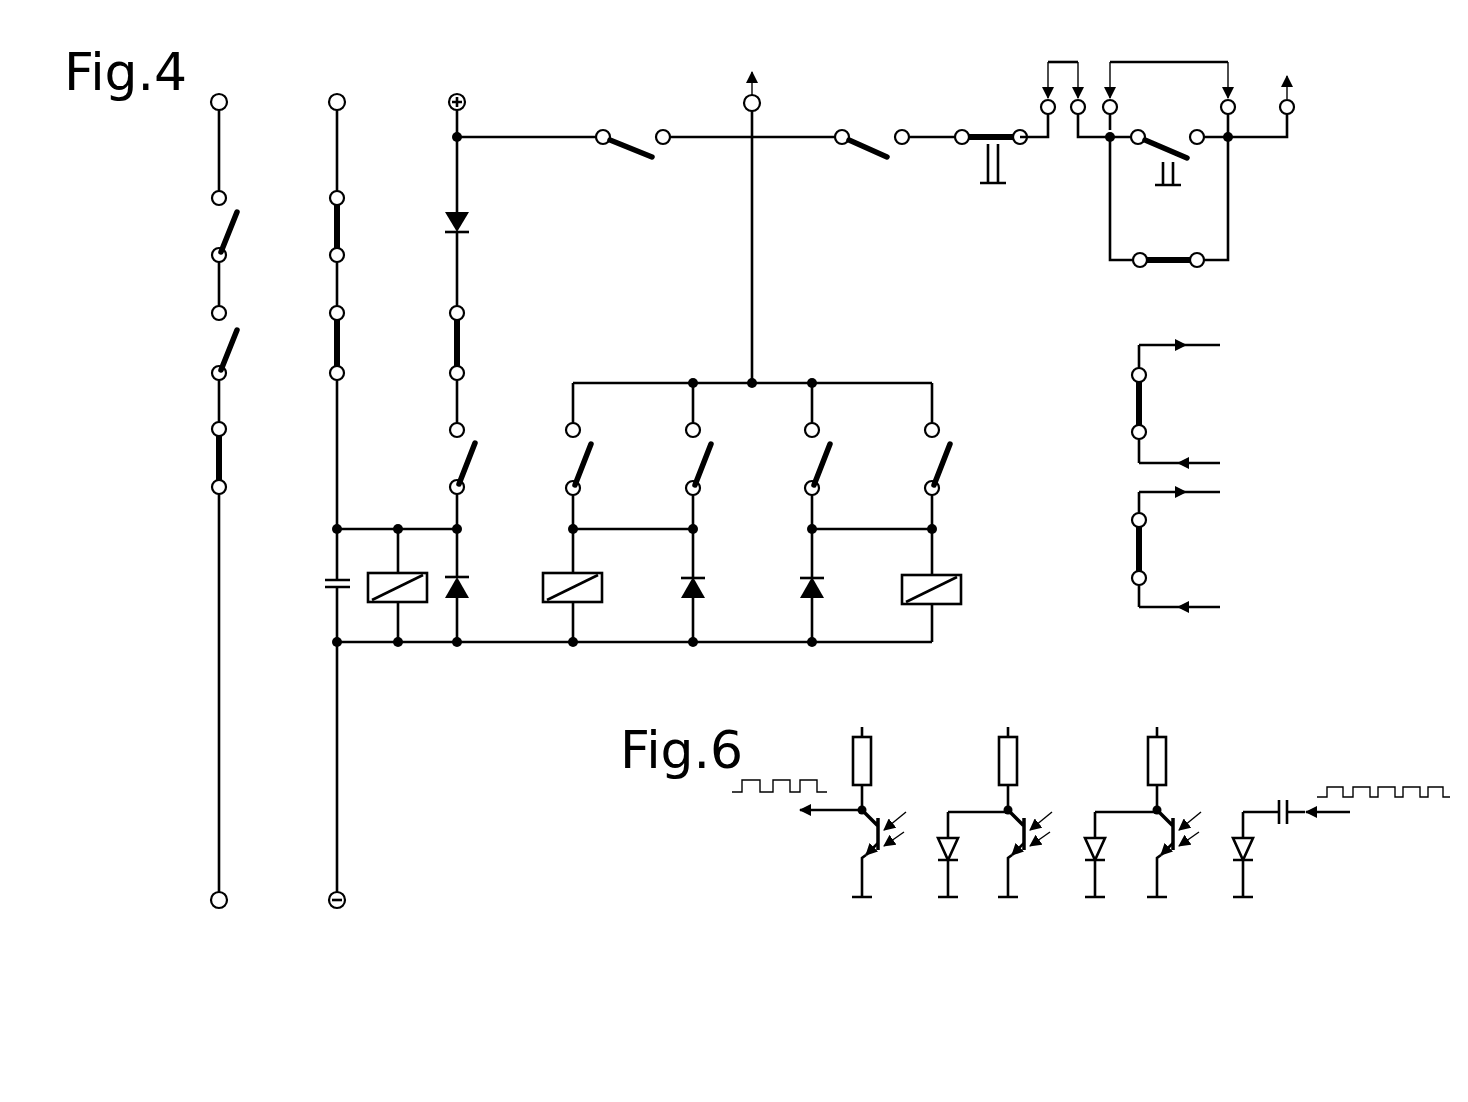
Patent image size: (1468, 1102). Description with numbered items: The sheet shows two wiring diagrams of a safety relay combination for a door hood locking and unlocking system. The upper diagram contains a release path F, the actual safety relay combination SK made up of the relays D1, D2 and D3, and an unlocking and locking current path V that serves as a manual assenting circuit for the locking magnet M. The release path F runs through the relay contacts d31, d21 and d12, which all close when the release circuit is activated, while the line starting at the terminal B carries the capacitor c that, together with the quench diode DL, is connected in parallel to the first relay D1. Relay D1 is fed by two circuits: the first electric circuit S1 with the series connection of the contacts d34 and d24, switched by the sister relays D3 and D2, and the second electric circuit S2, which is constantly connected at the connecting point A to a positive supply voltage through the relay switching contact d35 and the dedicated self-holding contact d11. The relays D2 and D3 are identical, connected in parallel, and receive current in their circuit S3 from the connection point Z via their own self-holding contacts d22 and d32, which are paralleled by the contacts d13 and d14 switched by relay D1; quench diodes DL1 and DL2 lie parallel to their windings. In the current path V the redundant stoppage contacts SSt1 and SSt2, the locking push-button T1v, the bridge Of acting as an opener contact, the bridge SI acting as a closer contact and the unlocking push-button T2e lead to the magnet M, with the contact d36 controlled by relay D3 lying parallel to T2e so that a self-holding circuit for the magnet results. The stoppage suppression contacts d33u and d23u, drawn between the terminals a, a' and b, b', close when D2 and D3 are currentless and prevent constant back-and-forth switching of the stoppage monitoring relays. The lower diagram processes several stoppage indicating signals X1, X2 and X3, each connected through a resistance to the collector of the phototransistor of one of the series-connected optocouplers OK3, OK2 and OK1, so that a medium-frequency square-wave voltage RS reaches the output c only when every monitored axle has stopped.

In FIG. 4, the release path F is at (215, 501).
In FIG. 4, the terminal B is at (355, 486).
In FIG. 4, the connecting point A is at (488, 355).
In FIG. 4, the connection point Z is at (752, 78).
In FIG. 4, the unlocking and locking current path V is at (777, 130).
In FIG. 4, the stoppage relay contact SSt1 is at (622, 155).
In FIG. 4, the stoppage relay contact SSt2 is at (862, 152).
In FIG. 4, the locking push-button T1v is at (991, 174).
In FIG. 4, the bridge Of is at (1047, 63).
In FIG. 4, the bridge SI is at (1168, 62).
In FIG. 4, the locking magnet M is at (1261, 93).
In FIG. 4, the unlocking push-button T2e is at (1169, 174).
In FIG. 4, the relay contact d36 is at (1168, 267).
In FIG. 4, the relay contact d31 is at (236, 228).
In FIG. 4, the relay contact d34 is at (340, 222).
In FIG. 4, the relay contact d21 is at (236, 345).
In FIG. 4, the relay contact d24 is at (340, 338).
In FIG. 4, the relay switching contact d35 is at (460, 338).
In FIG. 4, the relay contact d12 is at (222, 455).
In FIG. 4, the first electric circuit S1 is at (340, 440).
In FIG. 4, the second electric circuit S2 is at (460, 418).
In FIG. 4, the circuit S3 is at (750, 313).
In FIG. 4, the self-holding switching contact d11 is at (474, 455).
In FIG. 4, the contact d13 is at (590, 455).
In FIG. 4, the self-holding contact d22 is at (710, 455).
In FIG. 4, the self-holding contact d32 is at (829, 455).
In FIG. 4, the contact d14 is at (949, 455).
In FIG. 4, the first relay D1 is at (394, 576).
In FIG. 4, the relay D2 is at (586, 576).
In FIG. 4, the relay D3 is at (946, 576).
In FIG. 4, the quench diode DL is at (468, 593).
In FIG. 4, the quench diode DL1 is at (704, 594).
In FIG. 4, the quench diode DL2 is at (823, 594).
In FIG. 4, the capacitor c is at (330, 592).
In FIG. 6, the capacitor c is at (808, 815).
In FIG. 4, the safety relay combination SK is at (543, 652).
In FIG. 4, the stoppage suppression contact d33u is at (1138, 405).
In FIG. 4, the stoppage suppression contact d23u is at (1140, 551).
In FIG. 4, the terminal a is at (1189, 346).
In FIG. 4, the terminal a' is at (1193, 464).
In FIG. 4, the terminal b is at (1190, 493).
In FIG. 4, the terminal b' is at (1193, 608).
In FIG. 6, the stoppage indicating signal X1 is at (865, 798).
In FIG. 6, the stoppage indicating signal X2 is at (1011, 798).
In FIG. 6, the stoppage indicating signal X3 is at (1160, 798).
In FIG. 6, the optocoupler/amplifier stage OK1 is at (1225, 835).
In FIG. 6, the optocoupler/amplifier stage OK2 is at (1075, 833).
In FIG. 6, the optocoupler/amplifier stage OK3 is at (928, 833).
In FIG. 6, the square-wave voltage RS is at (1364, 785).